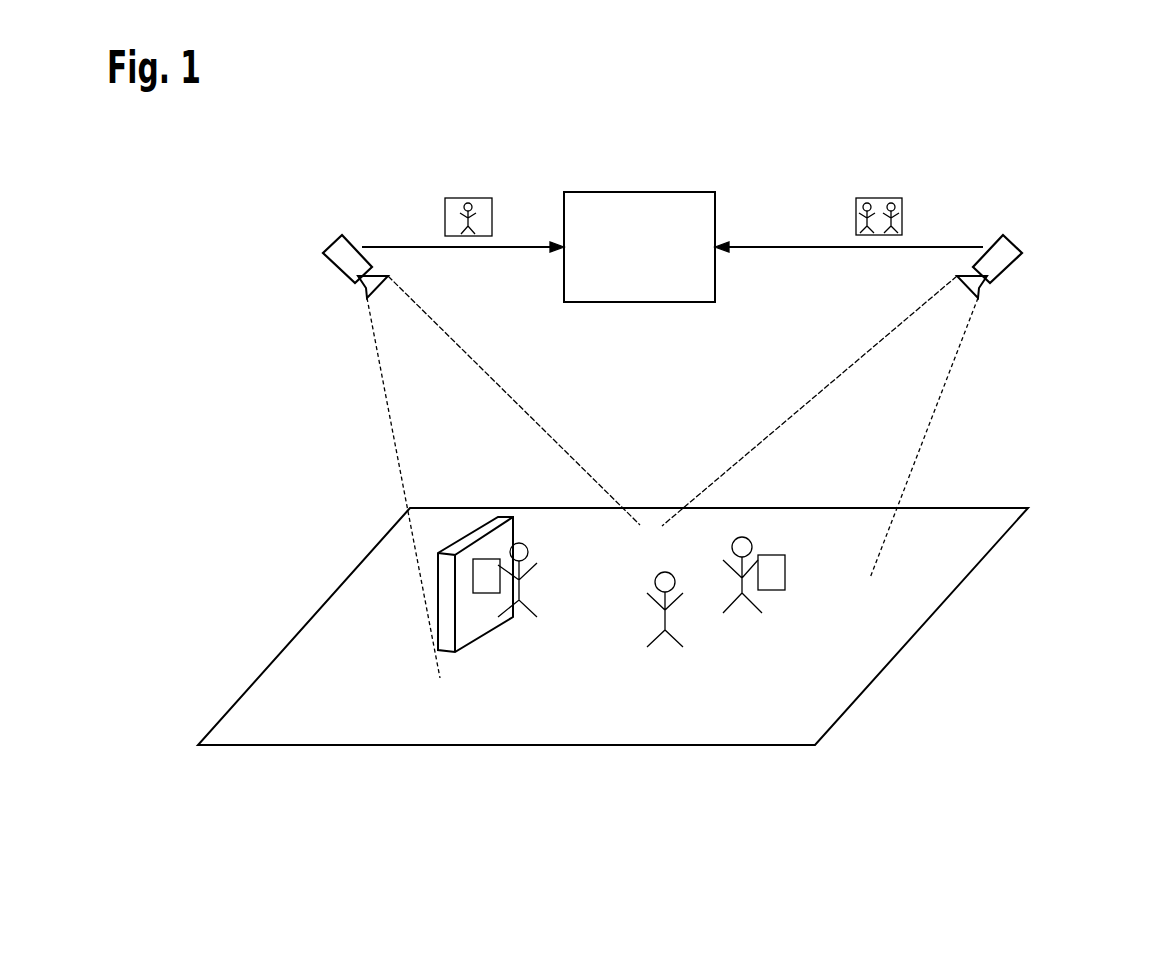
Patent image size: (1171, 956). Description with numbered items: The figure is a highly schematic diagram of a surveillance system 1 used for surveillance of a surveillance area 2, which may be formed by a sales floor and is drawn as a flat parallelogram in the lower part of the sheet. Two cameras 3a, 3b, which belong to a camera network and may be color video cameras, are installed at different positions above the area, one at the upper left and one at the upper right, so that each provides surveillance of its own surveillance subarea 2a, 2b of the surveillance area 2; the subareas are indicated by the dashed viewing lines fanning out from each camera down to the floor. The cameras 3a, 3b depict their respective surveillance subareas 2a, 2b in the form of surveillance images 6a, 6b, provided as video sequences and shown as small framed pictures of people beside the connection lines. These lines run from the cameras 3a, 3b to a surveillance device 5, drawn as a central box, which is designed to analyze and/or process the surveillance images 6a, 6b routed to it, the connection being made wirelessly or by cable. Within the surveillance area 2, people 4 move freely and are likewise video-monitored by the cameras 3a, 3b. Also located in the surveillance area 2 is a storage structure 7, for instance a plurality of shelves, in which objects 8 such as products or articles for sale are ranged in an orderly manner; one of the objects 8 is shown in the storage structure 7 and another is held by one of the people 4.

The surveillance system 1 is at (1098, 125).
The surveillance area 2 is at (940, 582).
The surveillance subarea 2a is at (377, 378).
The surveillance subarea 2b is at (945, 378).
The camera 3a is at (341, 248).
The camera 3b is at (1008, 248).
The people 4 is at (510, 628).
The surveillance device 5 is at (690, 220).
The surveillance image 6a is at (443, 222).
The surveillance image 6b is at (904, 220).
The storage structure 7 is at (475, 540).
The objects 8 is at (487, 588).